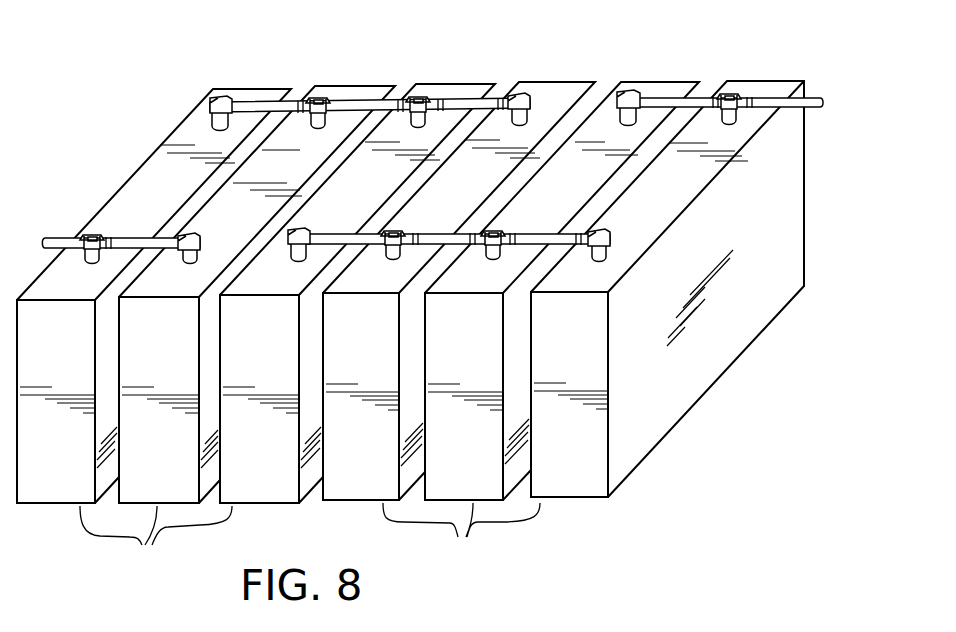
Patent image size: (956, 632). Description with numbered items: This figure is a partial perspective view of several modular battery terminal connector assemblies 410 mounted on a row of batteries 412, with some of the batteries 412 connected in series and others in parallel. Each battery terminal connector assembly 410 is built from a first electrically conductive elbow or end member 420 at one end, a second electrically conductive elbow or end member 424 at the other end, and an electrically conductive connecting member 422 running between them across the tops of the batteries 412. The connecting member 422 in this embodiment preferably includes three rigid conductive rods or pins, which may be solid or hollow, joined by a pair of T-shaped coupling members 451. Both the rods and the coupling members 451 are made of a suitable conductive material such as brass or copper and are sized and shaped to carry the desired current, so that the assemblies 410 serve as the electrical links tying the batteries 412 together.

The modular battery terminal connector assembly 410 is at (344, 86).
The battery 412 is at (310, 537).
The first electrically conductive elbow or end member 420 is at (522, 98).
The electrically conductive connecting member 422 is at (295, 99).
The second electrically conductive elbow or end member 424 is at (204, 112).
The T-shaped coupling member 451 is at (433, 96).